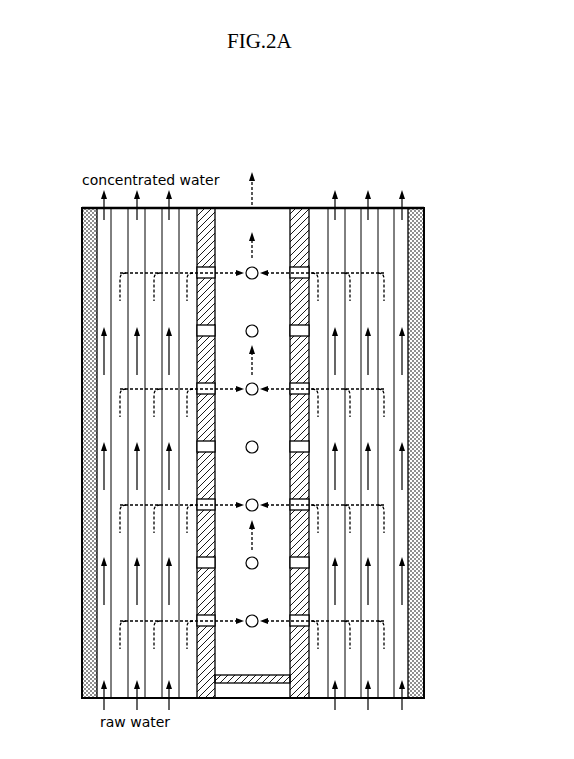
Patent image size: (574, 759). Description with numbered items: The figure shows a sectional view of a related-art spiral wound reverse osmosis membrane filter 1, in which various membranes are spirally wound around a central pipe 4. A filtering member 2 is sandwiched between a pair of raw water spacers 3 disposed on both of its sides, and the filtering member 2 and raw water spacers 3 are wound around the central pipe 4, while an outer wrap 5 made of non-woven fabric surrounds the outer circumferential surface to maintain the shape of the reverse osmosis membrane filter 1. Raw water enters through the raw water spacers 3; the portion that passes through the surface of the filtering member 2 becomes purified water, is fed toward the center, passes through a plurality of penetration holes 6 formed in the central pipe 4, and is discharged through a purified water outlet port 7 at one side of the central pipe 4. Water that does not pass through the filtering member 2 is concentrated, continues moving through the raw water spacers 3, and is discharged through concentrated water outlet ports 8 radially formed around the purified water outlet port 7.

The reverse osmosis membrane filter 1 is at (118, 148).
The filtering member 2 is at (357, 612).
The raw water spacer 3 is at (340, 543).
The central pipe 4 is at (300, 308).
The outer wrap 5 is at (410, 668).
The penetration holes 6 is at (305, 256).
The purified water outlet port 7 is at (265, 207).
The concentrated water outlet ports 8 is at (407, 210).